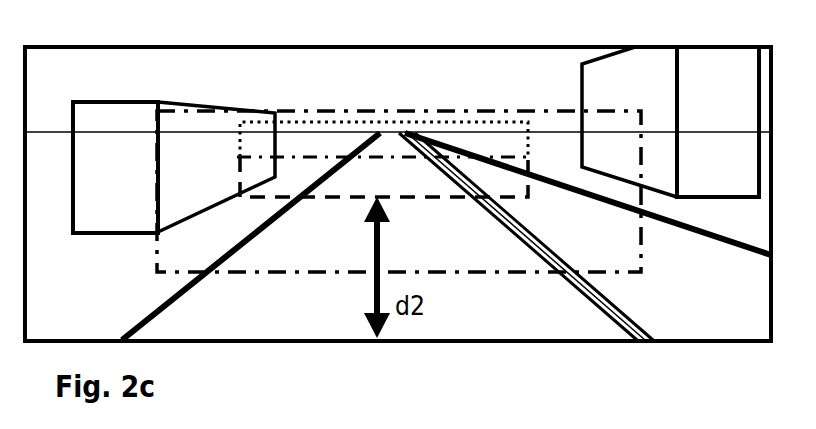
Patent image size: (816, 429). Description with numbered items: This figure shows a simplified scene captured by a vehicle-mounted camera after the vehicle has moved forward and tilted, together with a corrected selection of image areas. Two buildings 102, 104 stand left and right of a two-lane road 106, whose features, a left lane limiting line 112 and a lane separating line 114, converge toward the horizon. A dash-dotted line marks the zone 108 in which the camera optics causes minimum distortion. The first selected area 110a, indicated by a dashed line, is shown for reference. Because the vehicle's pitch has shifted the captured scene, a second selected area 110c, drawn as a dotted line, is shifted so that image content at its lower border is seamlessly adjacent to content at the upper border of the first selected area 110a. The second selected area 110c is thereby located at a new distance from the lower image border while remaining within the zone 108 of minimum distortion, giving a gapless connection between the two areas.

The building 102 is at (174, 167).
The building 104 is at (670, 122).
The two-lane road 106 is at (588, 226).
The zone of minimum distortion 108 is at (347, 106).
The first selected area 110a is at (382, 177).
The second selected area 110c is at (446, 121).
The left lane limiting line 112 is at (212, 280).
The lane separating line 114 is at (605, 323).